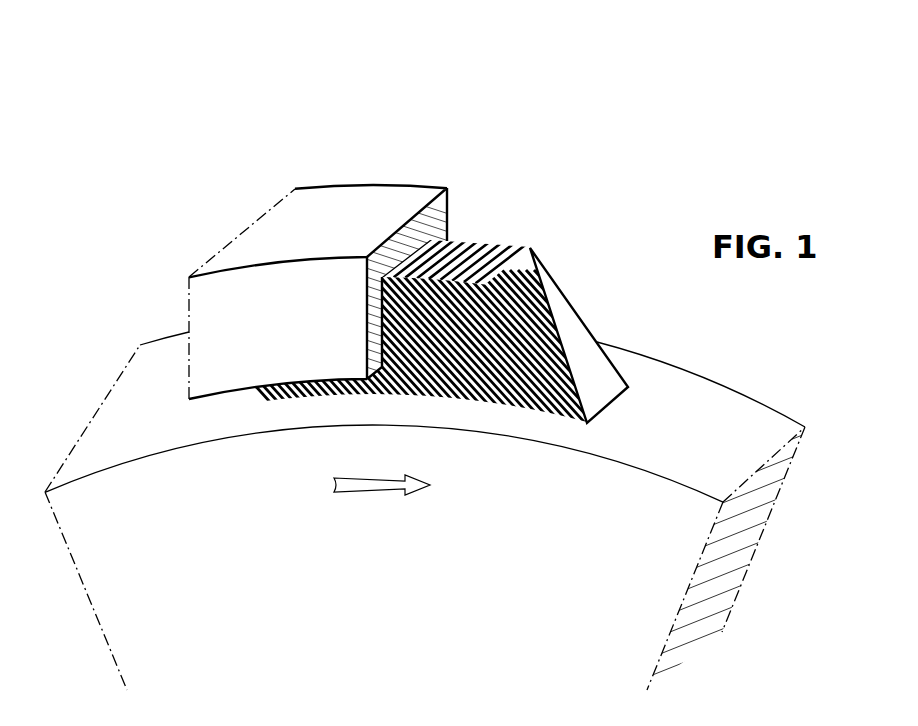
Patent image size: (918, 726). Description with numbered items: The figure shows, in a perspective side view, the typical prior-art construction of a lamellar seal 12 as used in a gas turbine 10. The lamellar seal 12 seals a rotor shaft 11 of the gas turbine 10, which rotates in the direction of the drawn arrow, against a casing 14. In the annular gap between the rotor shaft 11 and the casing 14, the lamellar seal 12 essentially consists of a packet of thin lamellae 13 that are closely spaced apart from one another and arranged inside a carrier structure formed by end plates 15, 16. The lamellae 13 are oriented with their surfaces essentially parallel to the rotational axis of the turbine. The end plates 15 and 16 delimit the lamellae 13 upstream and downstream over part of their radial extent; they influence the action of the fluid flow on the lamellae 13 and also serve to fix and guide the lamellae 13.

The gas turbine 10 is at (148, 290).
The rotor shaft 11 is at (567, 550).
The lamellar seal 12 is at (569, 297).
The lamellae 13 is at (535, 294).
The casing 14 is at (300, 218).
The end plate 15 is at (249, 309).
The end plate 16 is at (433, 221).